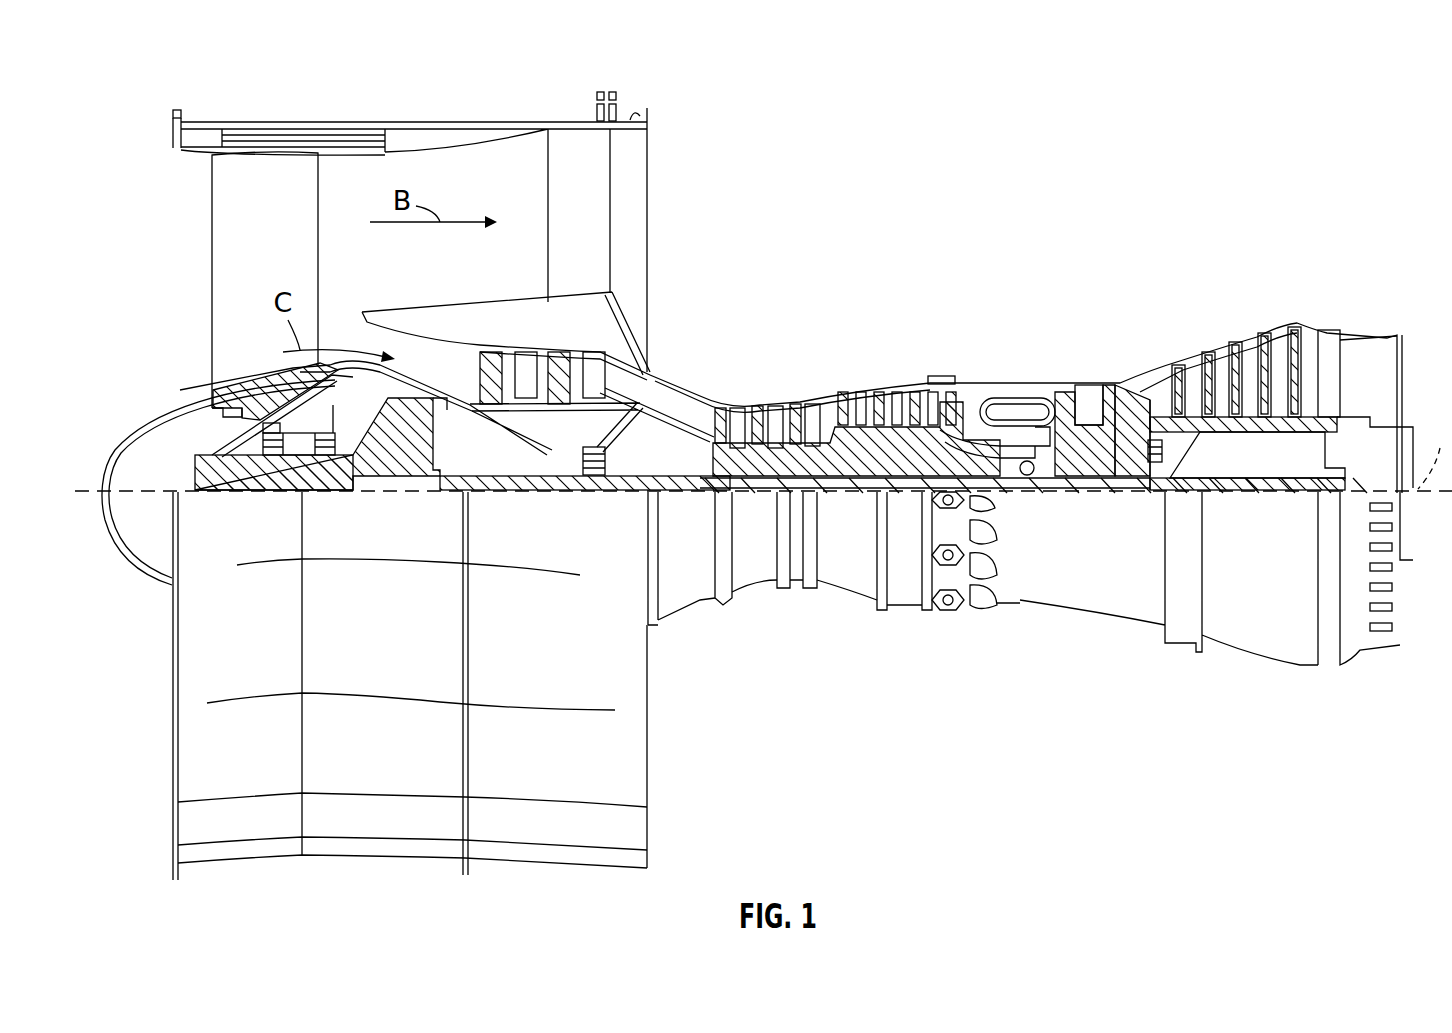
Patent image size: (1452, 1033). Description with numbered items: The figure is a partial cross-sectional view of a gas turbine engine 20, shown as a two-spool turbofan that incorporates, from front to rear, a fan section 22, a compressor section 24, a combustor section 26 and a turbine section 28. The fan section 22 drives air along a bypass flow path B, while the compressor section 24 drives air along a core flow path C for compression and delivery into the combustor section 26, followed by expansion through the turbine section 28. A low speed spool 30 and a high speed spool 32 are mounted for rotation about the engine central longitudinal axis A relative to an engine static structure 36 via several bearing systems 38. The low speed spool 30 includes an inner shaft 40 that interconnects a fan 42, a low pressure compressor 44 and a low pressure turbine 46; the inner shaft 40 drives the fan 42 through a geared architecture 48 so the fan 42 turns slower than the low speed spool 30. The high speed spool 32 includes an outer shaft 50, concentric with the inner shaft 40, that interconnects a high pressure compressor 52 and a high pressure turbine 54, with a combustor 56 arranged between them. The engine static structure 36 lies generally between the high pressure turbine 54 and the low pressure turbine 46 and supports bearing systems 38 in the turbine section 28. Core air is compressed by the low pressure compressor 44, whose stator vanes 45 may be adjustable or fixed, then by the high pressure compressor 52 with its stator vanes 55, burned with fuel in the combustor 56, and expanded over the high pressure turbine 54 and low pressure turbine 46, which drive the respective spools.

The gas turbine engine 20 is at (1220, 158).
The fan section 22 is at (276, 115).
The compressor section 24 is at (840, 255).
The combustor section 26 is at (997, 320).
The turbine section 28 is at (1281, 336).
The low speed spool 30 is at (866, 500).
The high speed spool 32 is at (918, 440).
The engine static structure 36 is at (906, 610).
The bearing systems 38 is at (275, 455).
The inner shaft 40 is at (663, 494).
The fan 42 is at (261, 253).
The low pressure compressor 44 is at (562, 332).
The stator vanes 45 is at (565, 358).
The low pressure turbine 46 is at (1253, 345).
The geared architecture 48 is at (410, 458).
The outer shaft 50 is at (1027, 478).
The high pressure compressor 52 is at (825, 450).
The high pressure turbine 54 is at (1086, 387).
The stator vanes 55 is at (858, 398).
The combustor 56 is at (1012, 405).